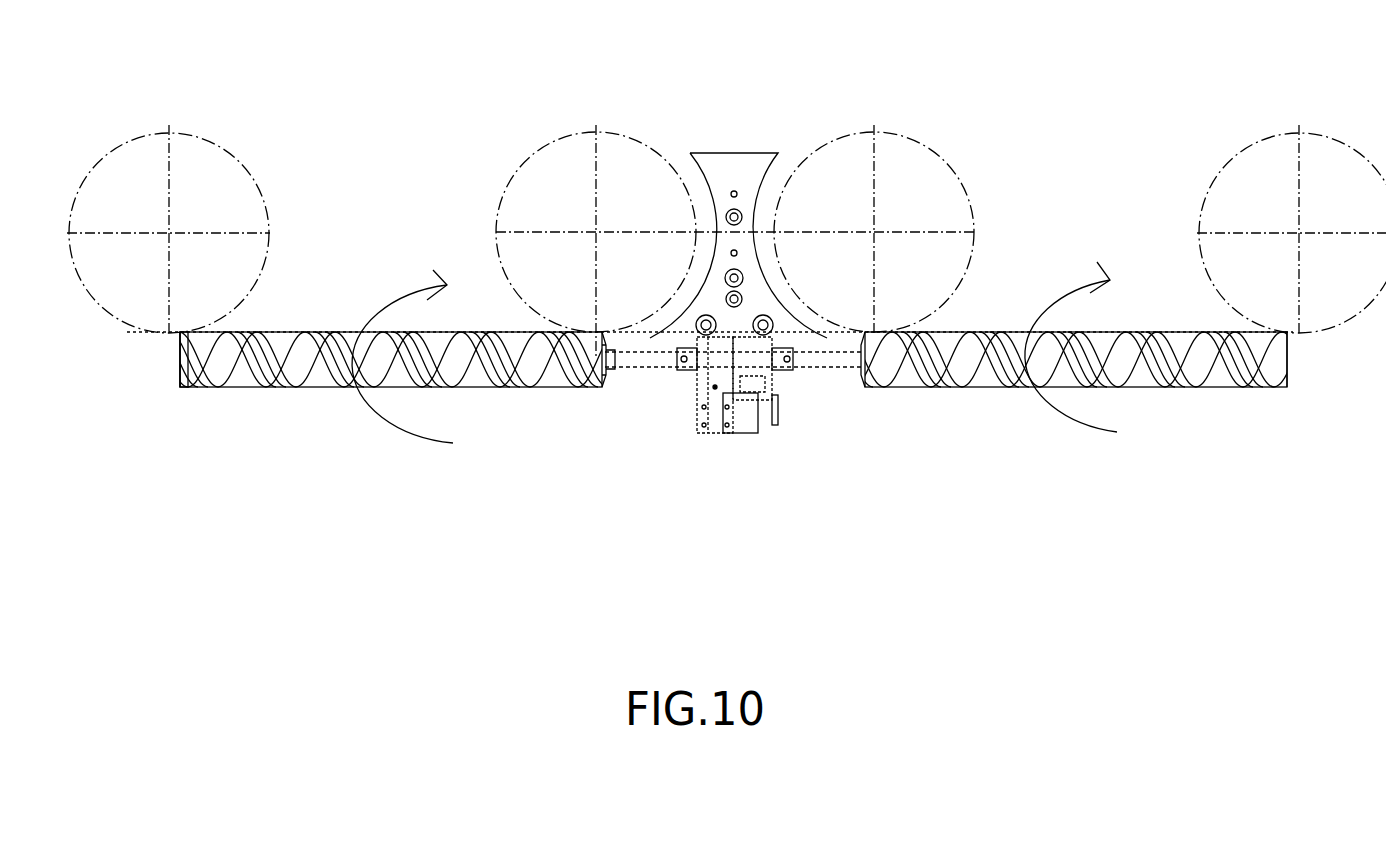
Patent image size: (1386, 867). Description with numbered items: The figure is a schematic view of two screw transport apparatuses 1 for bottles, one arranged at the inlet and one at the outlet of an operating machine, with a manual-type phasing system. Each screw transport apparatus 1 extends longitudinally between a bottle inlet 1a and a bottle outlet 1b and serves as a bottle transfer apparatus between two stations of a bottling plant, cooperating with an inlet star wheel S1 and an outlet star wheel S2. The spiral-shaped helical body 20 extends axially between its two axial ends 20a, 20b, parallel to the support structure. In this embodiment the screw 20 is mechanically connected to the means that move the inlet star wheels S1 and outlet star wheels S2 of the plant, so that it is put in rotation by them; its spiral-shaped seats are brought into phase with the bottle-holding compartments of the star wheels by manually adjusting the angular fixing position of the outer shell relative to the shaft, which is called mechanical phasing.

The inlet star wheel S1 is at (235, 177).
The outlet star wheel S2 is at (560, 157).
The screw transport apparatus 1 is at (465, 527).
The bottle inlet 1a is at (852, 382).
The bottle outlet 1b is at (158, 360).
The spiral-shaped helical body 20 is at (318, 408).
The axial end 20a is at (173, 395).
The axial end 20b is at (592, 395).